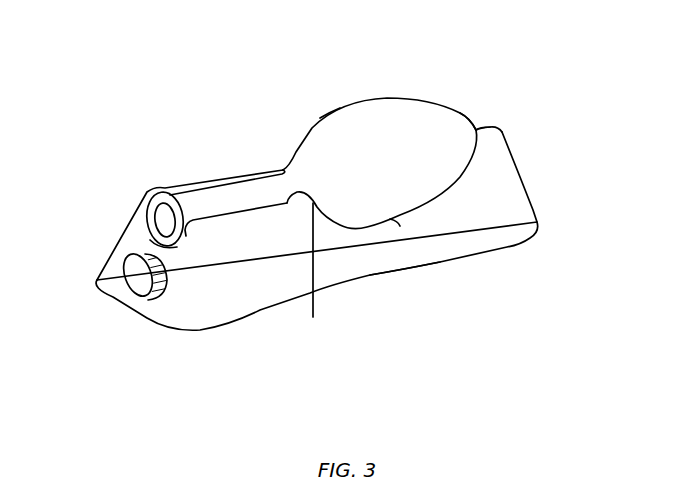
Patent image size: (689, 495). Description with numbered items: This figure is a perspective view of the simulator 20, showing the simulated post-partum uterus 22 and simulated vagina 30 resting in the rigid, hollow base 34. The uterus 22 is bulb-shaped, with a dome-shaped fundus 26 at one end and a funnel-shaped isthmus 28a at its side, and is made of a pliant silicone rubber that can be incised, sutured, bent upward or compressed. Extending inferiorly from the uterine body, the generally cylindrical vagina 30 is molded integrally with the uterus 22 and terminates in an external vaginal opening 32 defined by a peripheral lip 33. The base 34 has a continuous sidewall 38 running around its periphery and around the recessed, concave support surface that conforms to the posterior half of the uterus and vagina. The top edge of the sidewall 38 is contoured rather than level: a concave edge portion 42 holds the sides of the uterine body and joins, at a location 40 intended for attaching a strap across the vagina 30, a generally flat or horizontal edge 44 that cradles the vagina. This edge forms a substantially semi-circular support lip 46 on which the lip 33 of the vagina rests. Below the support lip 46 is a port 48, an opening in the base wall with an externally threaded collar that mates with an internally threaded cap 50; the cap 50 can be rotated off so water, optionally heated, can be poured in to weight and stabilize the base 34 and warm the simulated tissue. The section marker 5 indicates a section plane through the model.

The assembled simulator 20 is at (269, 67).
The simulated post-partum uterus 22 is at (387, 98).
The dome-shaped fundus 26 is at (460, 112).
The funnel-shaped isthmus 28a is at (490, 127).
The base 34 is at (510, 150).
The simulated vagina 30 is at (217, 195).
The peripheral lip 33 is at (160, 188).
The external vaginal opening 32 is at (165, 220).
The support lip 46 is at (177, 247).
The flat edge 44 is at (222, 217).
The concave edge portion 42 is at (368, 223).
The location 40 is at (324, 274).
The section marker 5 is at (323, 117).
The sidewall 38 is at (487, 225).
The cap 50 is at (142, 263).
The port 48 is at (162, 295).